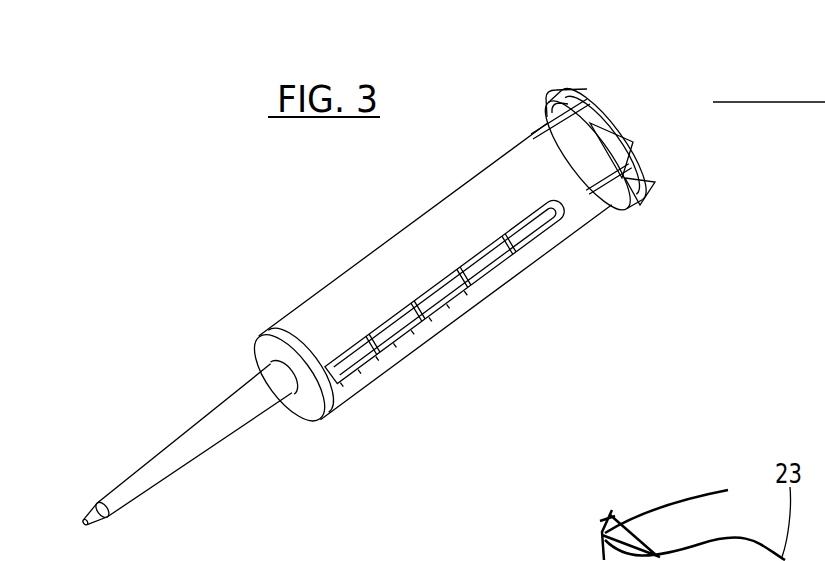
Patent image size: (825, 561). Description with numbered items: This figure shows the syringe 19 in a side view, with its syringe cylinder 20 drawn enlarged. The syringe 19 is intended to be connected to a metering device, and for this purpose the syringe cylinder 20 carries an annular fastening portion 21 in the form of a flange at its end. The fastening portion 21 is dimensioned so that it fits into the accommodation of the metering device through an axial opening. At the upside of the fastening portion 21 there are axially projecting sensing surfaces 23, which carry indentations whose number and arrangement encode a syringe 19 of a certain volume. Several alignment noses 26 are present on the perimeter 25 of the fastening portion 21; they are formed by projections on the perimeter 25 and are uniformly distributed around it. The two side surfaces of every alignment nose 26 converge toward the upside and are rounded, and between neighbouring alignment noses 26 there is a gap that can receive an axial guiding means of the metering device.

The syringe 19 is at (313, 242).
The syringe cylinder 20 is at (433, 325).
The fastening portion 21 is at (633, 163).
The sensing surfaces 23 is at (620, 133).
The perimeter 25 is at (563, 90).
The alignment noses 26 is at (590, 90).